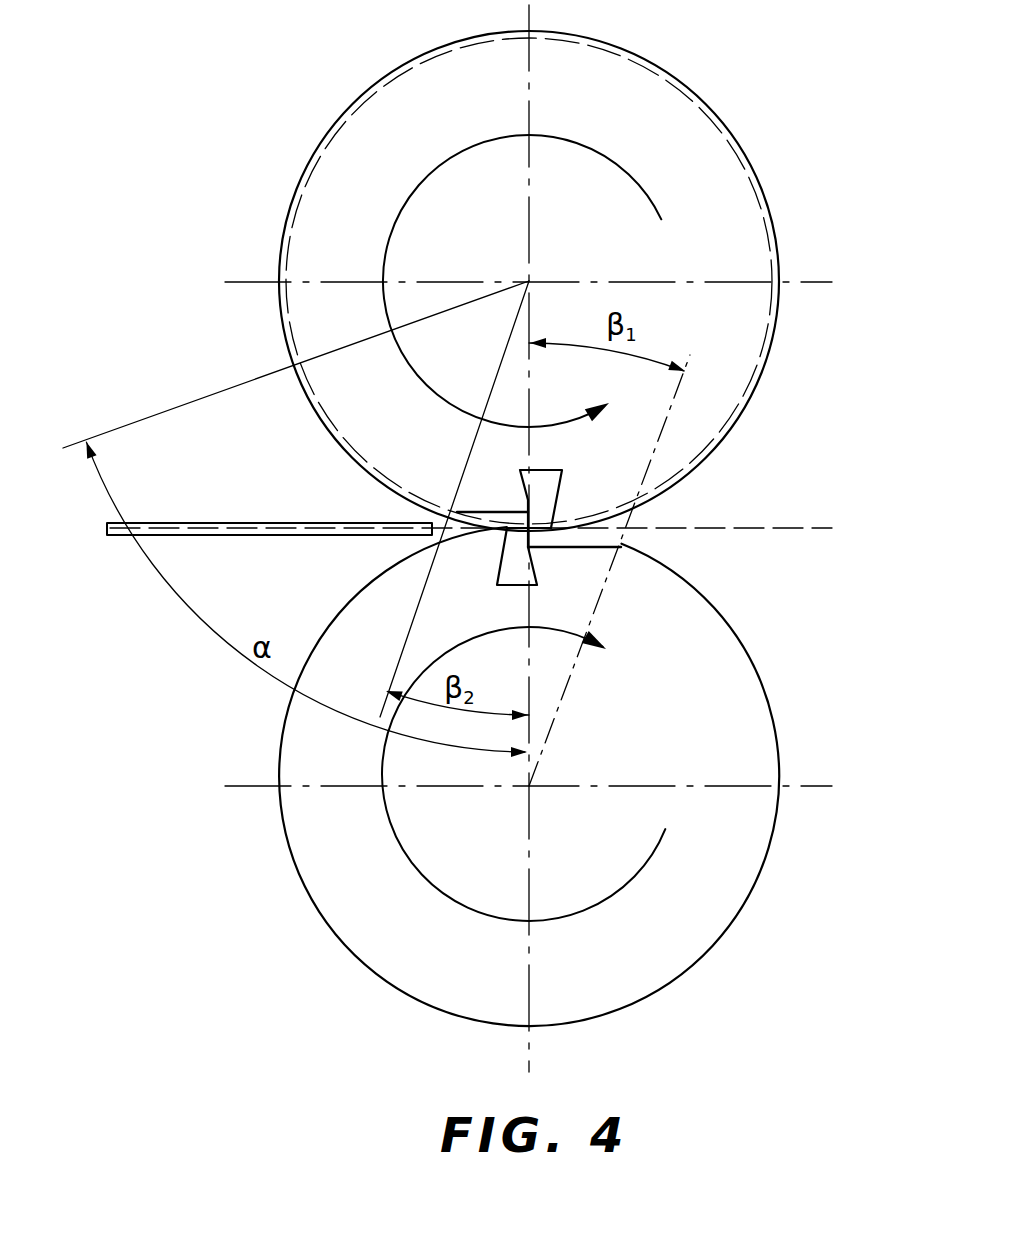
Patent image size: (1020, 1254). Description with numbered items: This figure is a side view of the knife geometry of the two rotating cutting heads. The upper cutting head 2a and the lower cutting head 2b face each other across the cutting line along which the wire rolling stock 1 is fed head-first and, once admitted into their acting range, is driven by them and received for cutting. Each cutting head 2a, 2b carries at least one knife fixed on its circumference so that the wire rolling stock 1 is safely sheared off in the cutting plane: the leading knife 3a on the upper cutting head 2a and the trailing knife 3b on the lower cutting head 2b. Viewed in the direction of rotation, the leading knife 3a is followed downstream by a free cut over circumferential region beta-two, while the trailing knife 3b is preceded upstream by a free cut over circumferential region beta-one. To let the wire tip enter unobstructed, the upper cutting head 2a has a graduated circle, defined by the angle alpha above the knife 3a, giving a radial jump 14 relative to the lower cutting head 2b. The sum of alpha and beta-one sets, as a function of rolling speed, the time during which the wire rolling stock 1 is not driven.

The wire rolling stock 1 is at (210, 523).
The upper cutting head 2a is at (693, 138).
The lower cutting head 2b is at (735, 743).
The leading knife 3a is at (542, 500).
The trailing knife 3b is at (513, 577).
The radial jump 14 is at (500, 281).